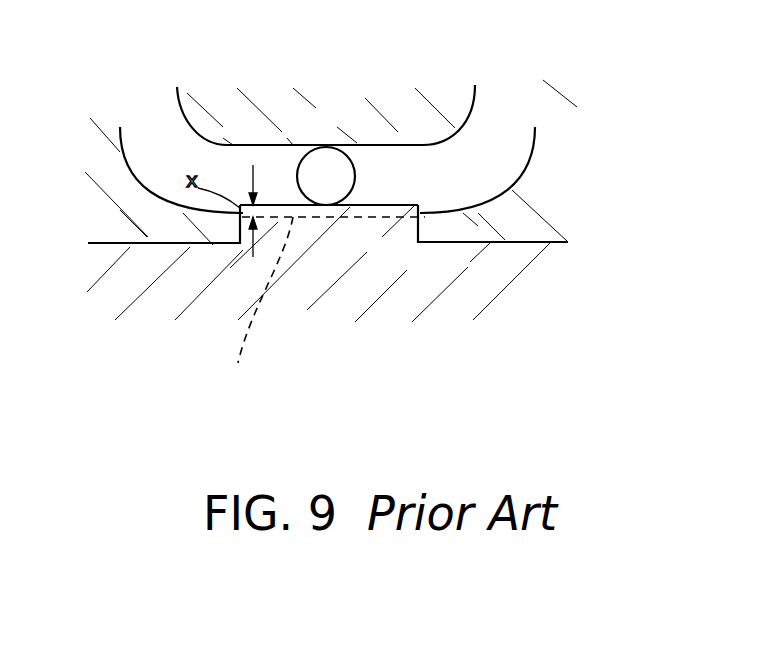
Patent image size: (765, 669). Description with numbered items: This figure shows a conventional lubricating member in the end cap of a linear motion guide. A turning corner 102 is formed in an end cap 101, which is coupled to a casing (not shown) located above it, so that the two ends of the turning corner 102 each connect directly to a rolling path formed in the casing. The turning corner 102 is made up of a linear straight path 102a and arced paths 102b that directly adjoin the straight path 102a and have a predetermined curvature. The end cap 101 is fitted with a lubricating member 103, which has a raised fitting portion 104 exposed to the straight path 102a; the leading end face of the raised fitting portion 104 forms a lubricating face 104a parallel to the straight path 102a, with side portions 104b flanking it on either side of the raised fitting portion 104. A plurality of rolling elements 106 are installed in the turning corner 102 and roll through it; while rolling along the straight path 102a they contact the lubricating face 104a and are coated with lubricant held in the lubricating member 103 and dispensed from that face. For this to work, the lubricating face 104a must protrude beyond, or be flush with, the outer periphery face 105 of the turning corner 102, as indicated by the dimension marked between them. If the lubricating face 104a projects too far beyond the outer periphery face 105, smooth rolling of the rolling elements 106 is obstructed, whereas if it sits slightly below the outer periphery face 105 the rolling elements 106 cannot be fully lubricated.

The end cap 101 is at (512, 200).
The turning corner 102 is at (512, 127).
The straight path 102a is at (377, 177).
The arced paths 102b is at (150, 123).
The lubricating member 103 is at (535, 283).
The raised fitting portion 104 is at (343, 243).
The lubricating face 104a is at (390, 205).
The ledge surfaces of base 104b is at (240, 222).
The outer periphery face 105 is at (321, 309).
The rolling elements 106 is at (320, 146).